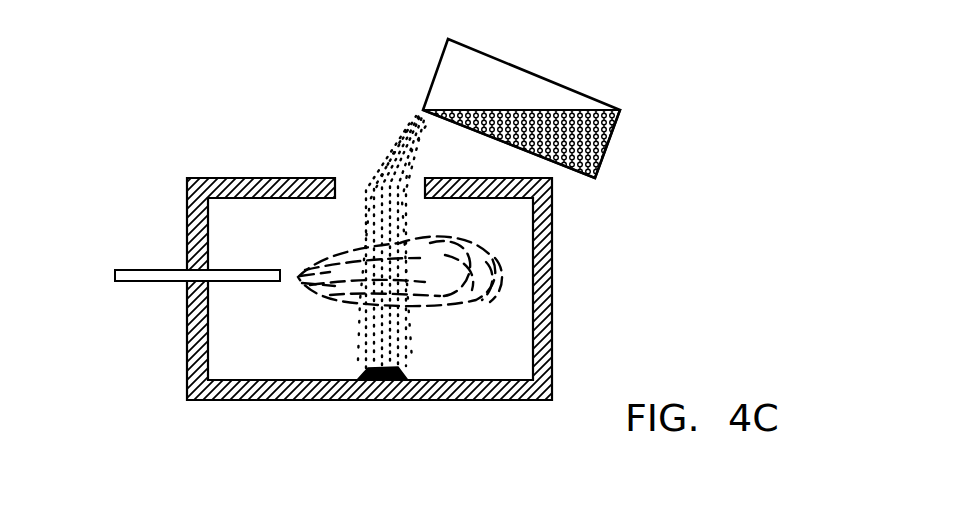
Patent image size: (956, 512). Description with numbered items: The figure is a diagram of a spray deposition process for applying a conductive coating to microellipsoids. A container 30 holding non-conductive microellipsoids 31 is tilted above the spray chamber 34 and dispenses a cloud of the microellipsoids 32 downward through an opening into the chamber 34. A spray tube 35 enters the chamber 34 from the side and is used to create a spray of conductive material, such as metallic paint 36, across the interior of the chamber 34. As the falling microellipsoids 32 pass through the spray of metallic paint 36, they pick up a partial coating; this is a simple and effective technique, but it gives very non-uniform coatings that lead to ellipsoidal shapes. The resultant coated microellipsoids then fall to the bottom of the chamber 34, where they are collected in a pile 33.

The container 30 is at (552, 77).
The non-conductive microellipsoids 31 is at (606, 141).
The cloud of microellipsoids 32 is at (397, 188).
The pile 33 is at (398, 363).
The spray chamber 34 is at (218, 182).
The spray tube 35 is at (157, 275).
The metallic paint 36 is at (470, 262).